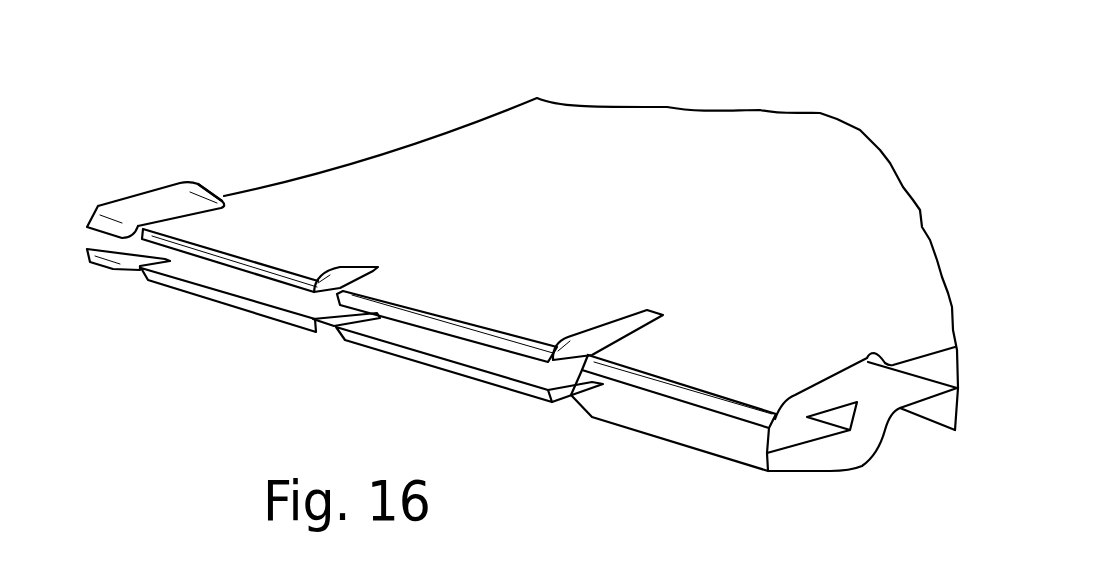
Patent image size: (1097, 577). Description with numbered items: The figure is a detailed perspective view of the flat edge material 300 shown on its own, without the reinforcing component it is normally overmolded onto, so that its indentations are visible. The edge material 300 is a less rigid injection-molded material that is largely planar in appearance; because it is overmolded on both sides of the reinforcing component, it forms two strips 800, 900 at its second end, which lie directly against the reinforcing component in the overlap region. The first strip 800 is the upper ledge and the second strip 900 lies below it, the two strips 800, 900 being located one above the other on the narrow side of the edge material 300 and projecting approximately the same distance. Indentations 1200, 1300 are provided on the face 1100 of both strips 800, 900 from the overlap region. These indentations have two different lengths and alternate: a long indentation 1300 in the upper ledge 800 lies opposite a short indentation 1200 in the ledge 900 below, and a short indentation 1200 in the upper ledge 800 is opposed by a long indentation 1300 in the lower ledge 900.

The edge material 300 is at (464, 106).
The first strip 800 is at (838, 385).
The second strip 900 is at (832, 453).
The face 1100 is at (98, 207).
The short indentation 1200 is at (358, 268).
The long indentation 1300 is at (217, 198).